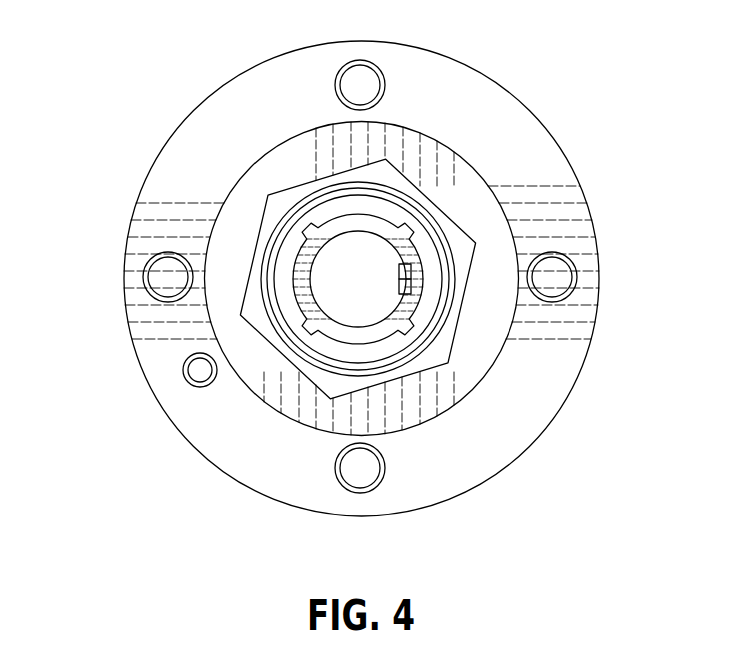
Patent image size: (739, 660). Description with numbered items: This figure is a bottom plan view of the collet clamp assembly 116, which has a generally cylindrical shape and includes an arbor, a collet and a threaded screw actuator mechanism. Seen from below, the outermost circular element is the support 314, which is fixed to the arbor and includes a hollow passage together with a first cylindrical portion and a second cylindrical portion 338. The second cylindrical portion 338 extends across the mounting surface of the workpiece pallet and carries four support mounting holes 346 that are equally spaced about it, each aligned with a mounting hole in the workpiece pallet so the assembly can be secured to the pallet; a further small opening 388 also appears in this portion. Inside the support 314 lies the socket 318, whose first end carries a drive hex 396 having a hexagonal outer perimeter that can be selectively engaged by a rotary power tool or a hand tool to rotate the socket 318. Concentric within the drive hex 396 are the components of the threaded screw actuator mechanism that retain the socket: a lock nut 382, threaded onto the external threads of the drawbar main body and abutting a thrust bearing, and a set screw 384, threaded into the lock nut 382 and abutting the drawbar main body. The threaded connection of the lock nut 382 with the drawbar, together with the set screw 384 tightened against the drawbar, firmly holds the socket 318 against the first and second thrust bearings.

The collet clamp assembly 116 is at (546, 123).
The support 314 is at (586, 365).
The socket 318 is at (280, 356).
The second cylindrical portion 338 is at (527, 428).
The support mounting hole 346 is at (362, 72).
The lock nut 382 is at (386, 195).
The set screw 384 is at (400, 287).
The mounting hole 388 is at (383, 80).
The drive hex 396 is at (285, 188).